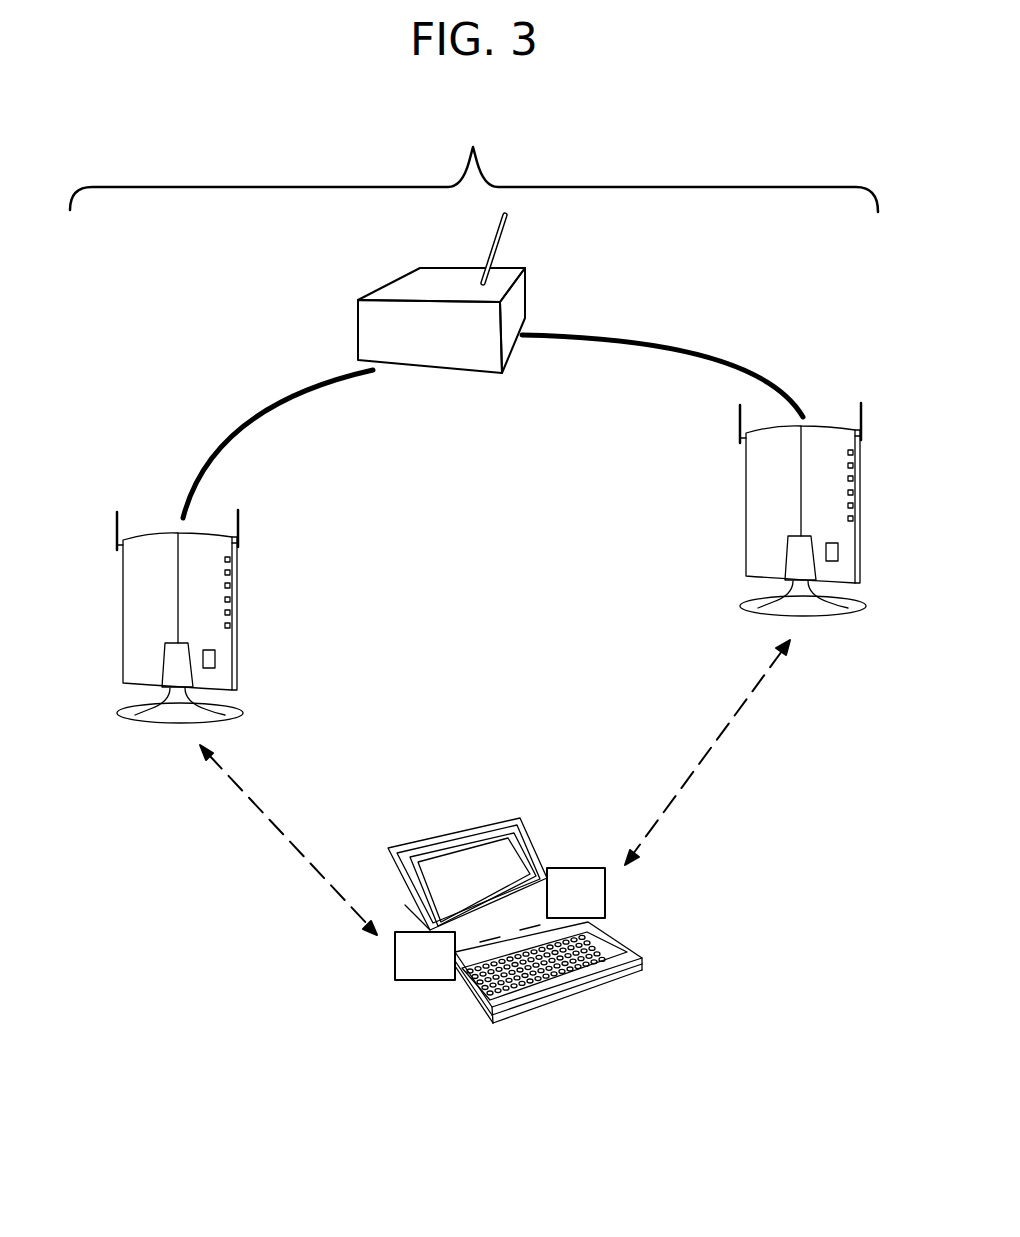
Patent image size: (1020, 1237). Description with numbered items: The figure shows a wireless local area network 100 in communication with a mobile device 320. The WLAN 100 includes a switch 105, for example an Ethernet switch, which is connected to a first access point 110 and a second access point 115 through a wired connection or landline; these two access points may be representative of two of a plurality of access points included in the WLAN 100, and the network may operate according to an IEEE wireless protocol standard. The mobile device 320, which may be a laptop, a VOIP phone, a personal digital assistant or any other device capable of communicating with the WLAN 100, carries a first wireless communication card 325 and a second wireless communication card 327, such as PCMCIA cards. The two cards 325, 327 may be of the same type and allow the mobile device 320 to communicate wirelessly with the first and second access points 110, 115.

The wireless local area network 100 is at (474, 163).
The switch 105 is at (390, 284).
The first access point 110 is at (237, 615).
The second access point 115 is at (747, 515).
The mobile device 320 is at (447, 832).
The first wireless communication card 325 is at (422, 983).
The second wireless communication card 327 is at (607, 892).